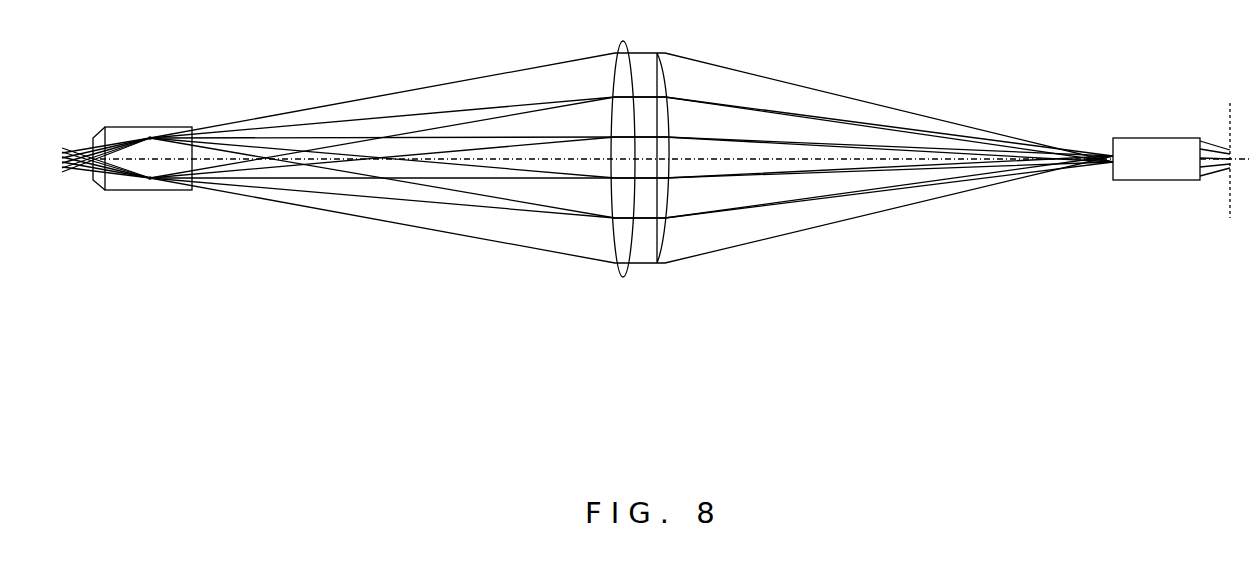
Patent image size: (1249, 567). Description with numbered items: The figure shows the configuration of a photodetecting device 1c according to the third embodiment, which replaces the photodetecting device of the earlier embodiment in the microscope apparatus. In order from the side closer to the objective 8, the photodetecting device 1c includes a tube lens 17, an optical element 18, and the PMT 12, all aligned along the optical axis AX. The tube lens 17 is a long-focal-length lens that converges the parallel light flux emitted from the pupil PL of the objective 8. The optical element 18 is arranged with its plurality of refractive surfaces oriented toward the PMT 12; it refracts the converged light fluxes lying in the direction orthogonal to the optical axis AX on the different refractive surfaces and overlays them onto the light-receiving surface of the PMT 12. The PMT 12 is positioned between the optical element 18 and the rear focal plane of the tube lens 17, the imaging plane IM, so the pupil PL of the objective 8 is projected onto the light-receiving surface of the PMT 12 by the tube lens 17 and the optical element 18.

The photodetecting device 1c is at (1040, 37).
The objective 8 is at (189, 109).
The pupil PL is at (150, 198).
The tube lens 17 is at (623, 42).
The optical element 18 is at (658, 53).
The optical axis AX is at (804, 157).
The PMT 12 is at (1128, 138).
The imaging plane IM is at (1226, 117).